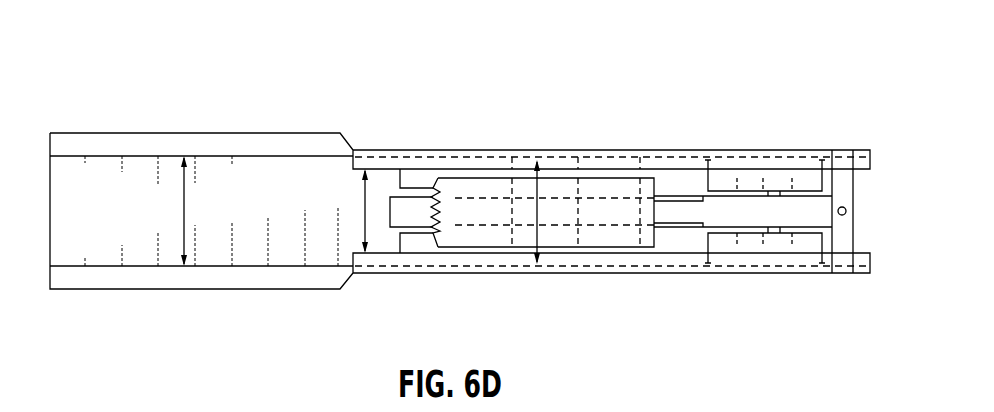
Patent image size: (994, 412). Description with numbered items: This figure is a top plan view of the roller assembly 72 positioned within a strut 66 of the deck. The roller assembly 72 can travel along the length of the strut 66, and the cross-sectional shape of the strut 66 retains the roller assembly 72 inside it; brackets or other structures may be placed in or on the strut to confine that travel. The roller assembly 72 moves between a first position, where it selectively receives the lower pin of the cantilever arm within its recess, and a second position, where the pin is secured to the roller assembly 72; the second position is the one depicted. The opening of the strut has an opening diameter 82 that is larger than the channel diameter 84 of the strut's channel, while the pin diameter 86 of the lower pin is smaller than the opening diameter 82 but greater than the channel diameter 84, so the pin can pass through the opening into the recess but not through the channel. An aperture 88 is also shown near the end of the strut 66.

The strut 66 is at (193, 114).
The roller assembly 72 is at (673, 188).
The opening diameter 82 is at (184, 223).
The channel diameter 84 is at (365, 212).
The pin diameter 86 is at (535, 190).
The aperture 88 is at (848, 209).